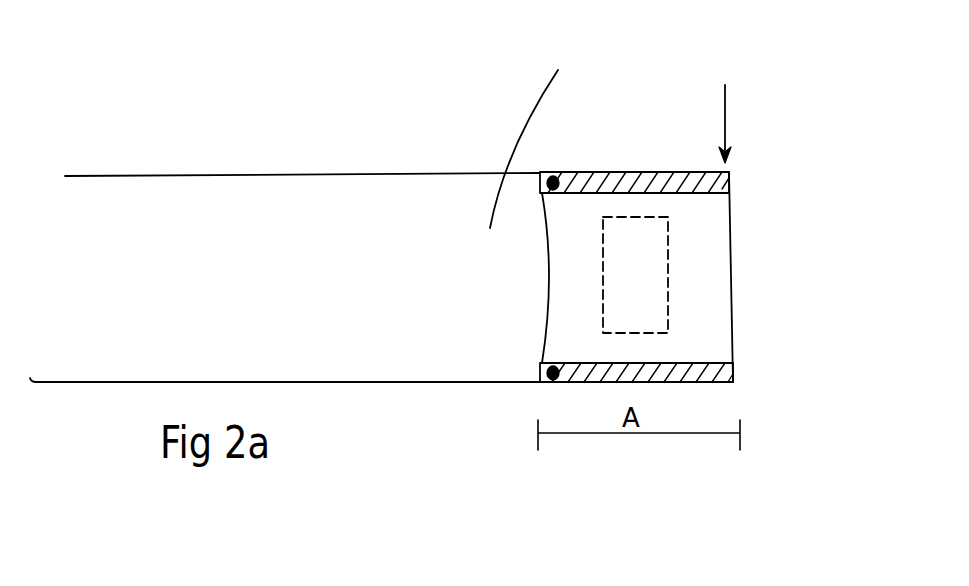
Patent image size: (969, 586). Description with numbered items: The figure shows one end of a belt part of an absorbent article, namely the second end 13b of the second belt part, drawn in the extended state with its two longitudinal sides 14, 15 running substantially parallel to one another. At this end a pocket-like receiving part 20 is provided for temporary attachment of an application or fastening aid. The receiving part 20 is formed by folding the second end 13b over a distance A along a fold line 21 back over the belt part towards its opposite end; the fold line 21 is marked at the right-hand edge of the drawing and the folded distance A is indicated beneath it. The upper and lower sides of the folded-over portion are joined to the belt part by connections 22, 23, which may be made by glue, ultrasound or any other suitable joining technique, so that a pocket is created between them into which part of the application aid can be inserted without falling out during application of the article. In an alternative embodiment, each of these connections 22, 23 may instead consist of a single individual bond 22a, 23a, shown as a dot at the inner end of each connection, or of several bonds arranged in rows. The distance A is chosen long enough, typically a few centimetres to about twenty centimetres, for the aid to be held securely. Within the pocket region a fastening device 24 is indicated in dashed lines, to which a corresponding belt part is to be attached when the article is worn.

The longitudinal side 14 is at (338, 176).
The longitudinal side 15 is at (348, 382).
The second end of the second belt part 13b is at (546, 120).
The receiving part 20 is at (693, 322).
The line 21 is at (725, 100).
The connection 22 is at (595, 175).
The individual bond 22a is at (556, 177).
The connection 23 is at (578, 380).
The individual bond 23a is at (547, 382).
The fastening device 24 is at (635, 255).